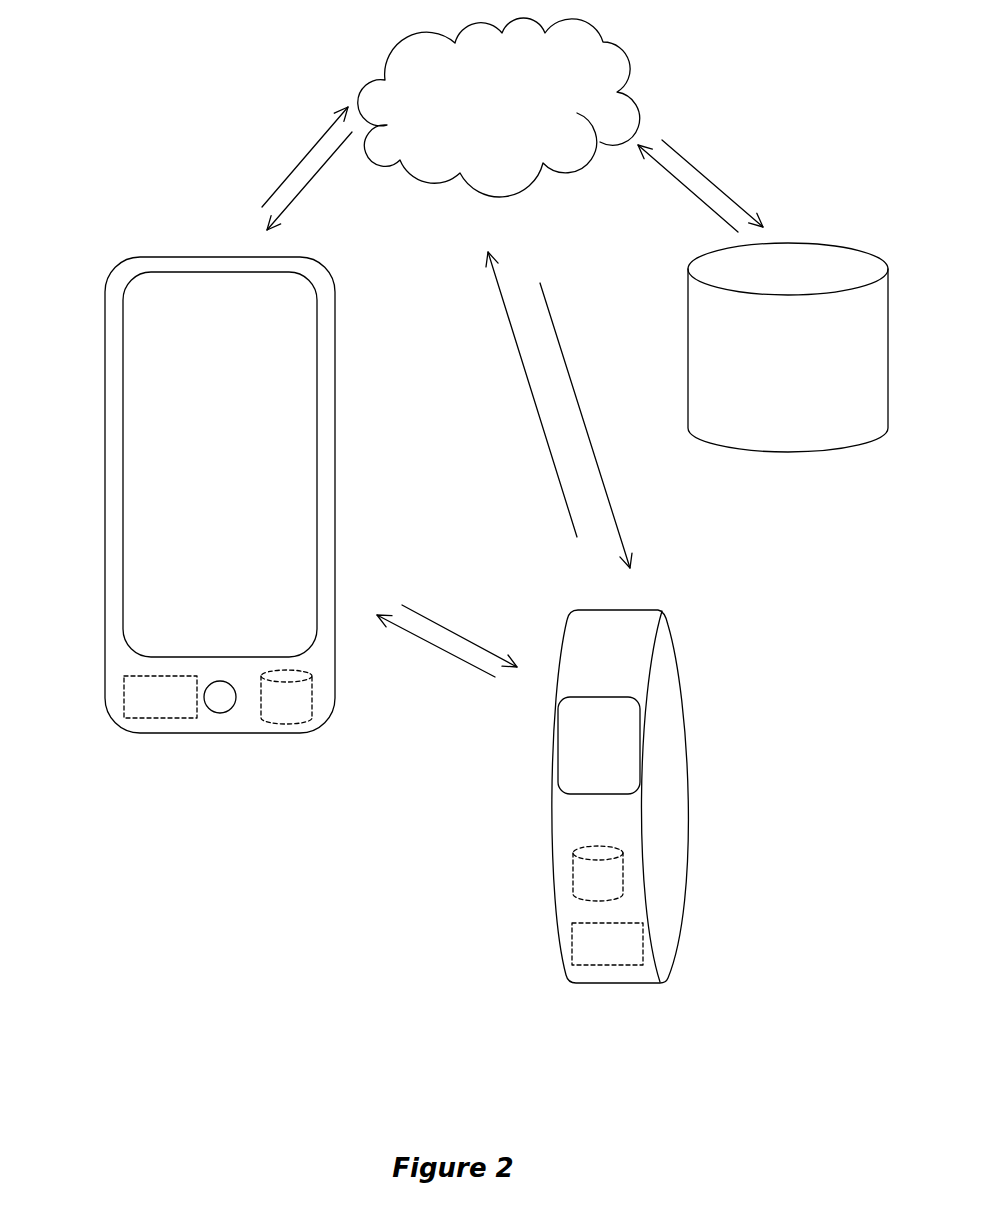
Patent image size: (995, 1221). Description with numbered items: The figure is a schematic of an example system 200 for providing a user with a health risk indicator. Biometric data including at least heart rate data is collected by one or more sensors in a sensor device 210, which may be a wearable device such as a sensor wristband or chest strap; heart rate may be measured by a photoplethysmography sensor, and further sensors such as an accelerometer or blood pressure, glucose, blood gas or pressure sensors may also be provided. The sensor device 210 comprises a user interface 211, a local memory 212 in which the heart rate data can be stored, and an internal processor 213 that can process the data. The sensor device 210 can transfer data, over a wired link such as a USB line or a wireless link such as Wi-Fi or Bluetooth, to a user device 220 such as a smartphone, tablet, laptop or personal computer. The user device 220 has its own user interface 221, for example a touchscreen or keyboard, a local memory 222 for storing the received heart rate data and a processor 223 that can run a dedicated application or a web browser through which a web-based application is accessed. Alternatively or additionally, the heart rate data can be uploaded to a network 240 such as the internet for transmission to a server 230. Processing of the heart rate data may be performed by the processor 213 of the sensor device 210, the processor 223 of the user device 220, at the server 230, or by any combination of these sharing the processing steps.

The system environment 200 is at (136, 71).
The sensor device 210 is at (583, 796).
The user interface 211 is at (599, 745).
The memory 212 is at (598, 873).
The processor 213 is at (607, 944).
The user device 220 is at (183, 495).
The user interface 221 is at (220, 464).
The memory 222 is at (286, 697).
The processor 223 is at (160, 697).
The server 230 is at (788, 347).
The network 240 is at (499, 107).